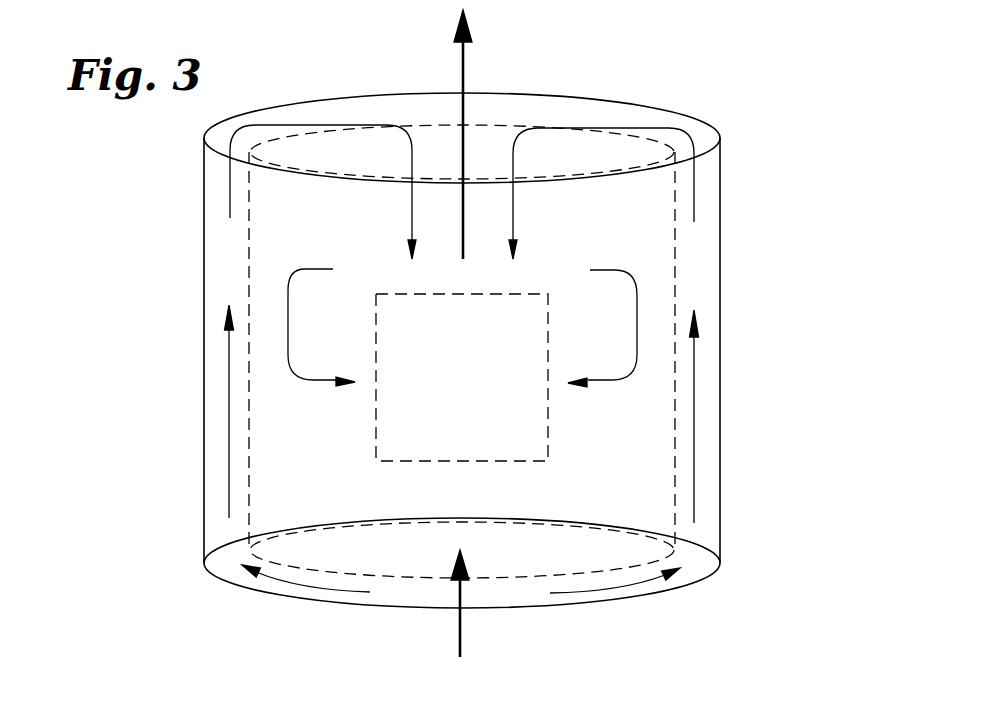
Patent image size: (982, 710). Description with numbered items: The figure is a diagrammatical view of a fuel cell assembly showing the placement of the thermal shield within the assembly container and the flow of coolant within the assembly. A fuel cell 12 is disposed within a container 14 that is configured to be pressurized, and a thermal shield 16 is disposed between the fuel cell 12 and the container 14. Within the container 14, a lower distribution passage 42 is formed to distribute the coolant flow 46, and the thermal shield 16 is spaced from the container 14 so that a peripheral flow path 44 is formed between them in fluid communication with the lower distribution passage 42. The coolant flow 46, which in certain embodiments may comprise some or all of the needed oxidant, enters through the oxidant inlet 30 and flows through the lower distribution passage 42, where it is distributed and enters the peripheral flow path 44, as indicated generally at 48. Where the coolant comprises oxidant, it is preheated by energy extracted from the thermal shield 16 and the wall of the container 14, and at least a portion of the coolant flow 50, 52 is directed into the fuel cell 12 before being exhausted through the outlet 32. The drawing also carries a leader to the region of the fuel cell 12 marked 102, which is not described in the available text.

The fuel cell 12 is at (448, 394).
The container 14 is at (720, 172).
The thermal shield 16 is at (675, 270).
The oxidant inlet 30 is at (463, 622).
The outlet 32 is at (465, 67).
The lower distribution passage 42 is at (672, 585).
The peripheral flow path 44 is at (710, 452).
The coolant flow 46 is at (308, 587).
The coolant entering peripheral passage 48 is at (694, 375).
The coolant flow directed into fuel cell 50 is at (657, 128).
The coolant flow directed into fuel cell 52 is at (290, 303).
The treatment chamber 102 is at (376, 417).